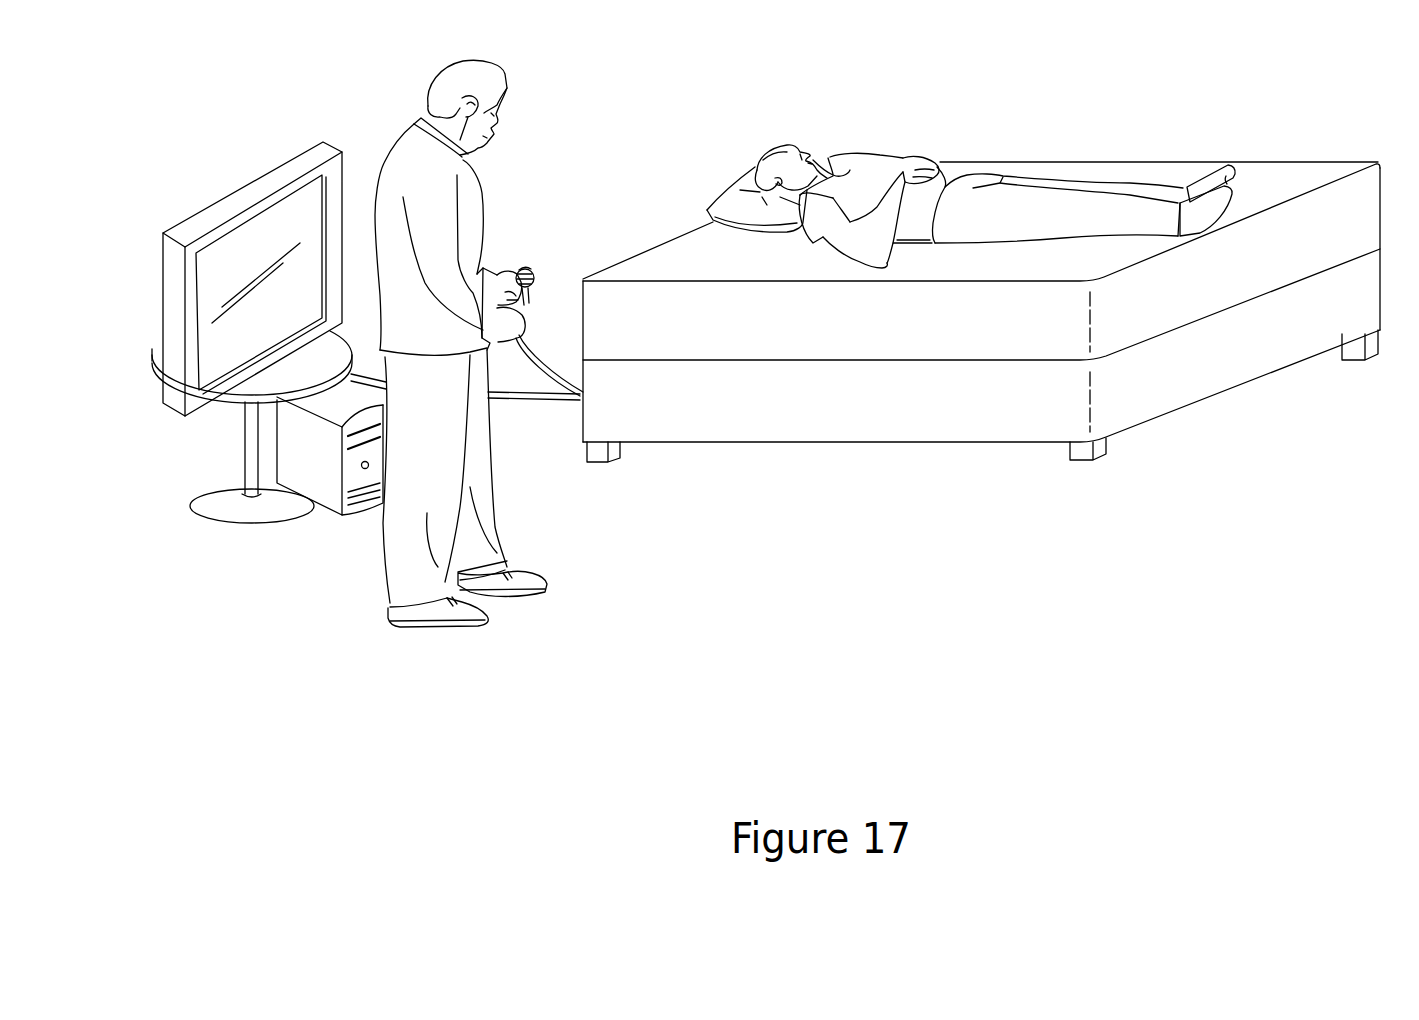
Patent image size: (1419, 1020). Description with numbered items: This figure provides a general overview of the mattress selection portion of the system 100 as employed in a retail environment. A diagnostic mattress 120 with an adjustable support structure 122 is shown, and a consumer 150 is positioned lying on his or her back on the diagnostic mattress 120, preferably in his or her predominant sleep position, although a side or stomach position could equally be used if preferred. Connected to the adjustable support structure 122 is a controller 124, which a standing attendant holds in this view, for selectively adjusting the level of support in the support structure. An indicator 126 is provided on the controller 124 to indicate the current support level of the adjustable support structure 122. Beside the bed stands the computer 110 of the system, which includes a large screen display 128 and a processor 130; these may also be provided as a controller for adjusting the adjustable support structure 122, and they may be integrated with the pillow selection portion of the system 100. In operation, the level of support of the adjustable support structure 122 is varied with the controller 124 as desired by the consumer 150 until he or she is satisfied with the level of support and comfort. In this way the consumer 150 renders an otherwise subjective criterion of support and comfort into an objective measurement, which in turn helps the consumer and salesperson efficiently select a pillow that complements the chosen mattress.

The system 100 is at (700, 558).
The computer 110 is at (150, 492).
The diagnostic mattress 120 is at (1222, 408).
The adjustable support structure 122 is at (928, 337).
The controller 124 is at (532, 270).
The indicator 126 is at (525, 268).
The display 128 is at (262, 175).
The processor 130 is at (338, 517).
The consumer 150 is at (958, 171).